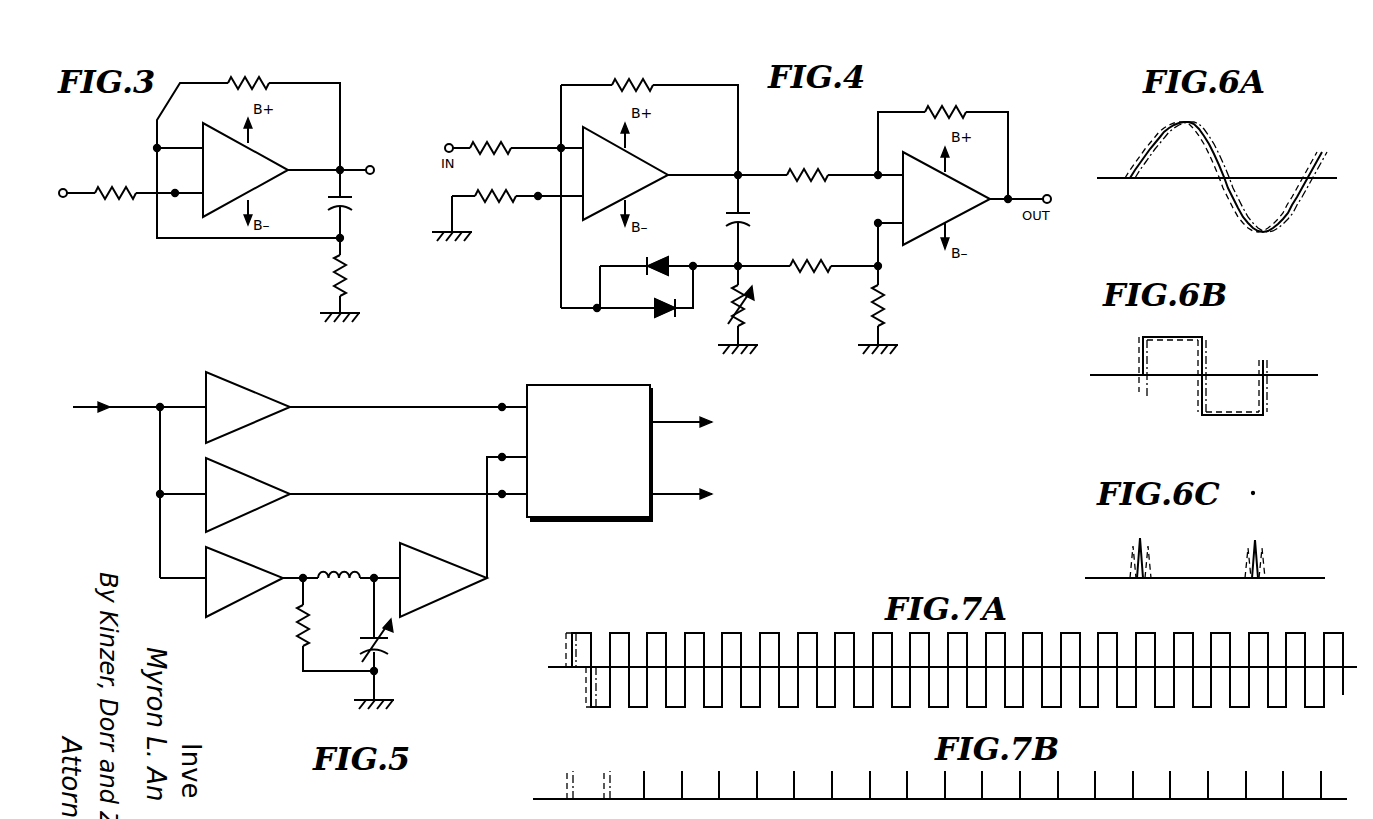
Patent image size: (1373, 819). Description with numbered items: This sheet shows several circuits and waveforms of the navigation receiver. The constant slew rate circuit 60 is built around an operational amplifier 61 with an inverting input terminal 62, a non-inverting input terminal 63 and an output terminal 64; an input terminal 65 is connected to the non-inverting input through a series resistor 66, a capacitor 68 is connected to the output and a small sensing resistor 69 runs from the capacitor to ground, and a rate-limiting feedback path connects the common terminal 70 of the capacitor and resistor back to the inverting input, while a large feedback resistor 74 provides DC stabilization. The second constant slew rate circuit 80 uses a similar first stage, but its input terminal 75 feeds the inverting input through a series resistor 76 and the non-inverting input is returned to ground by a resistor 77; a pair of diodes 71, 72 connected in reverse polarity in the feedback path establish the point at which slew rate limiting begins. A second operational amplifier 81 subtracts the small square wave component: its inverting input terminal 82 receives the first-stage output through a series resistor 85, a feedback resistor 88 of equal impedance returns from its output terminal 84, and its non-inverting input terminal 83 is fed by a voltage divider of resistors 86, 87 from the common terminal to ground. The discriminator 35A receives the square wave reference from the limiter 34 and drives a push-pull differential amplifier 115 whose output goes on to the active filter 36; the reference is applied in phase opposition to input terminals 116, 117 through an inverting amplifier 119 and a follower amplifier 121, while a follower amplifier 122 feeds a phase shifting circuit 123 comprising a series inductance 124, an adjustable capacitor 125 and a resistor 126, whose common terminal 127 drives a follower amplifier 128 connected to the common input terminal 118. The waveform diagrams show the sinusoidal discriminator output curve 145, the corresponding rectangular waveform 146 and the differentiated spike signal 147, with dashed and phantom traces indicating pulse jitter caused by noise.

In FIG. 3, the constant slew rate circuit 60 is at (248, 250).
In FIG. 3, the operational amplifier 61 is at (258, 188).
In FIG. 4, the operational amplifier 61 is at (641, 160).
In FIG. 3, the inverting input terminal 62 is at (157, 148).
In FIG. 4, the inverting input terminal 62 is at (558, 151).
In FIG. 3, the non-inverting input terminal 63 is at (176, 197).
In FIG. 4, the non-inverting input terminal 63 is at (538, 201).
In FIG. 3, the output terminal 64 is at (338, 168).
In FIG. 4, the output terminal 64 is at (739, 171).
In FIG. 3, the input terminal 65 is at (64, 198).
In FIG. 3, the series resistor 66 is at (120, 188).
In FIG. 3, the capacitor 68 is at (346, 206).
In FIG. 4, the capacitor 68 is at (753, 222).
In FIG. 3, the sensing resistor 69 is at (326, 268).
In FIG. 4, the sensing resistor 69 is at (744, 322).
In FIG. 3, the common terminal 70 is at (343, 243).
In FIG. 4, the common terminal 70 is at (742, 266).
In FIG. 3, the feedback resistor 74 is at (278, 82).
In FIG. 4, the feedback resistor 74 is at (624, 82).
In FIG. 4, the input terminal 75 is at (449, 143).
In FIG. 4, the series resistor 76 is at (493, 143).
In FIG. 4, the resistor 77 is at (496, 214).
In FIG. 4, the diode 71 is at (658, 257).
In FIG. 4, the diode 72 is at (658, 300).
In FIG. 4, the constant slew rate circuit 80 is at (715, 292).
In FIG. 4, the operational amplifier 81 is at (919, 242).
In FIG. 4, the inverting input terminal 82 is at (876, 172).
In FIG. 4, the non-inverting input terminal 83 is at (873, 223).
In FIG. 4, the output terminal 84 is at (1010, 196).
In FIG. 4, the series resistor 85 is at (798, 170).
In FIG. 4, the resistor 86 is at (810, 276).
In FIG. 4, the resistor 87 is at (887, 334).
In FIG. 4, the feedback resistor 88 is at (958, 109).
In FIG. 5, the limiter 34 is at (98, 408).
In FIG. 5, the discriminator 35A is at (390, 396).
In FIG. 5, the active filter 36 is at (691, 465).
In FIG. 5, the push-pull differential amplifier 115 is at (590, 520).
In FIG. 5, the input terminal 116 is at (496, 412).
In FIG. 5, the input terminal 117 is at (500, 500).
In FIG. 5, the common input terminal 118 is at (500, 455).
In FIG. 5, the inverting amplifier 119 is at (238, 387).
In FIG. 5, the follower amplifier 121 is at (252, 476).
In FIG. 5, the follower amplifier 122 is at (246, 550).
In FIG. 5, the phase shifting circuit 123 is at (352, 617).
In FIG. 5, the series inductance 124 is at (334, 572).
In FIG. 5, the adjustable capacitor 125 is at (398, 650).
In FIG. 5, the resistor 126 is at (294, 642).
In FIG. 5, the common terminal 127 is at (372, 576).
In FIG. 5, the follower amplifier 128 is at (414, 548).
In FIG. 6A, the sinusoidal signal curve 145 is at (1218, 151).
In FIG. 6B, the rectangular waveform 146 is at (1180, 338).
In FIG. 7A, the rectangular waveform 146 is at (845, 633).
In FIG. 6C, the spike signal 147 is at (1253, 540).
In FIG. 7B, the spike signal 147 is at (868, 771).